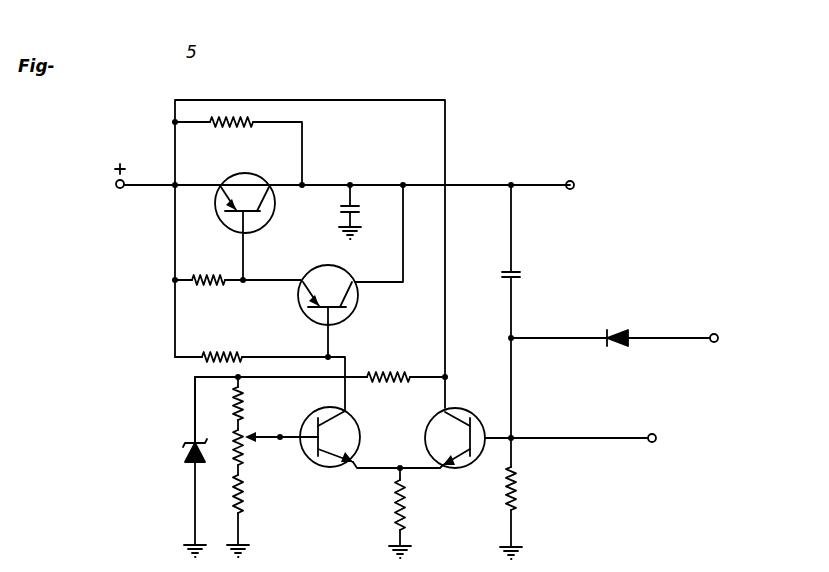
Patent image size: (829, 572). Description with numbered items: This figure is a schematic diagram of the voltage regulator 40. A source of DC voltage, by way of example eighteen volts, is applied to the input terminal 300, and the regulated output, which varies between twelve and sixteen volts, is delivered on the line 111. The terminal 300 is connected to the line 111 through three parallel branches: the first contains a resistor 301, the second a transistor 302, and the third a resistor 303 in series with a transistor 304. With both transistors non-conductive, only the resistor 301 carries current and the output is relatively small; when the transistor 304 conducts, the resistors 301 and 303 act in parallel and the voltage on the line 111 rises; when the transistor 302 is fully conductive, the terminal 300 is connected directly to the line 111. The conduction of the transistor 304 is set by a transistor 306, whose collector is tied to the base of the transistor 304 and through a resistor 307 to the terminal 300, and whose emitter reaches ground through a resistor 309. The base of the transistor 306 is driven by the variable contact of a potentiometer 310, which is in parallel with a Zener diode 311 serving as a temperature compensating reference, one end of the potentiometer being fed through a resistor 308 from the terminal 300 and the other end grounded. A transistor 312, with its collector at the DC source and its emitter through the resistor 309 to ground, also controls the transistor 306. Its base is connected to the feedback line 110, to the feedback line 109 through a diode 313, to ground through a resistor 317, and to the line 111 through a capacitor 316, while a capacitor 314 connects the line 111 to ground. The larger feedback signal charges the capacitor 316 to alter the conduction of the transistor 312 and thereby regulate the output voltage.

The voltage regulator 40 is at (114, 148).
The input terminal 300 is at (143, 186).
The resistor 301 is at (230, 132).
The transistor 302 is at (268, 226).
The resistor 303 is at (206, 286).
The transistor 304 is at (357, 305).
The transistor 306 is at (360, 425).
The resistor 307 is at (228, 353).
The resistor 308 is at (388, 371).
The resistor 309 is at (407, 506).
The potentiometer 310 is at (244, 456).
The Zener diode 311 is at (183, 456).
The transistor 312 is at (463, 404).
The diode 313 is at (628, 328).
The capacitor 314 is at (343, 208).
The capacitor 316 is at (518, 270).
The resistor 317 is at (517, 495).
The output line 111 is at (538, 185).
The feedback line 109 is at (668, 339).
The feedback line 110 is at (588, 438).